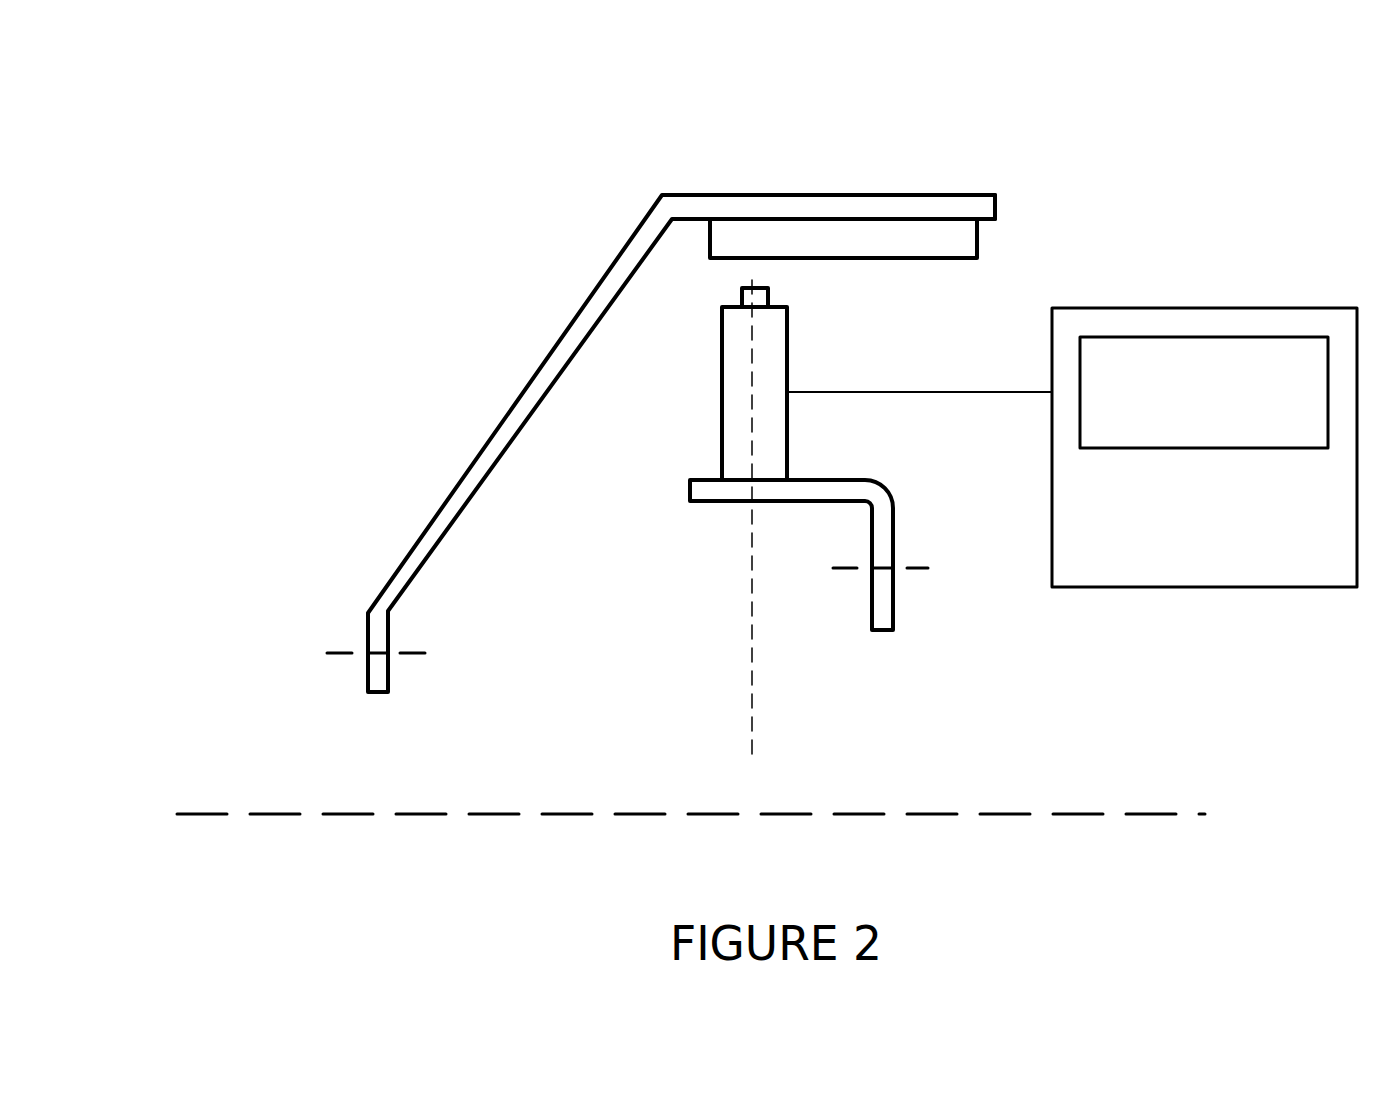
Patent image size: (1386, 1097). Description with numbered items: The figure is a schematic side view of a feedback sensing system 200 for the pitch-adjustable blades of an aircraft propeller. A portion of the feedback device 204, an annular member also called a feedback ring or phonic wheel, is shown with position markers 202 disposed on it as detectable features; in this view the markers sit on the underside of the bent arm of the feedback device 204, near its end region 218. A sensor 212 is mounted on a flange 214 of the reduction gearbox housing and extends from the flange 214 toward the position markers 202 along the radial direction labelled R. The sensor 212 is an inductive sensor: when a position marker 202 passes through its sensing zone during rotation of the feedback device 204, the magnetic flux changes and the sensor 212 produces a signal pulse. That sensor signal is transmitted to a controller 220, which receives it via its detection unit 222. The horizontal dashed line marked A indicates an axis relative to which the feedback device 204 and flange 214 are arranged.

The feedback sensing system 200 is at (400, 166).
The position markers 202 is at (820, 235).
The feedback device 204 is at (390, 578).
The sensor 212 is at (718, 375).
The flange 214 is at (688, 490).
The arm end edge 218 is at (983, 223).
The controller 220 is at (1232, 572).
The detection unit 222 is at (1232, 427).